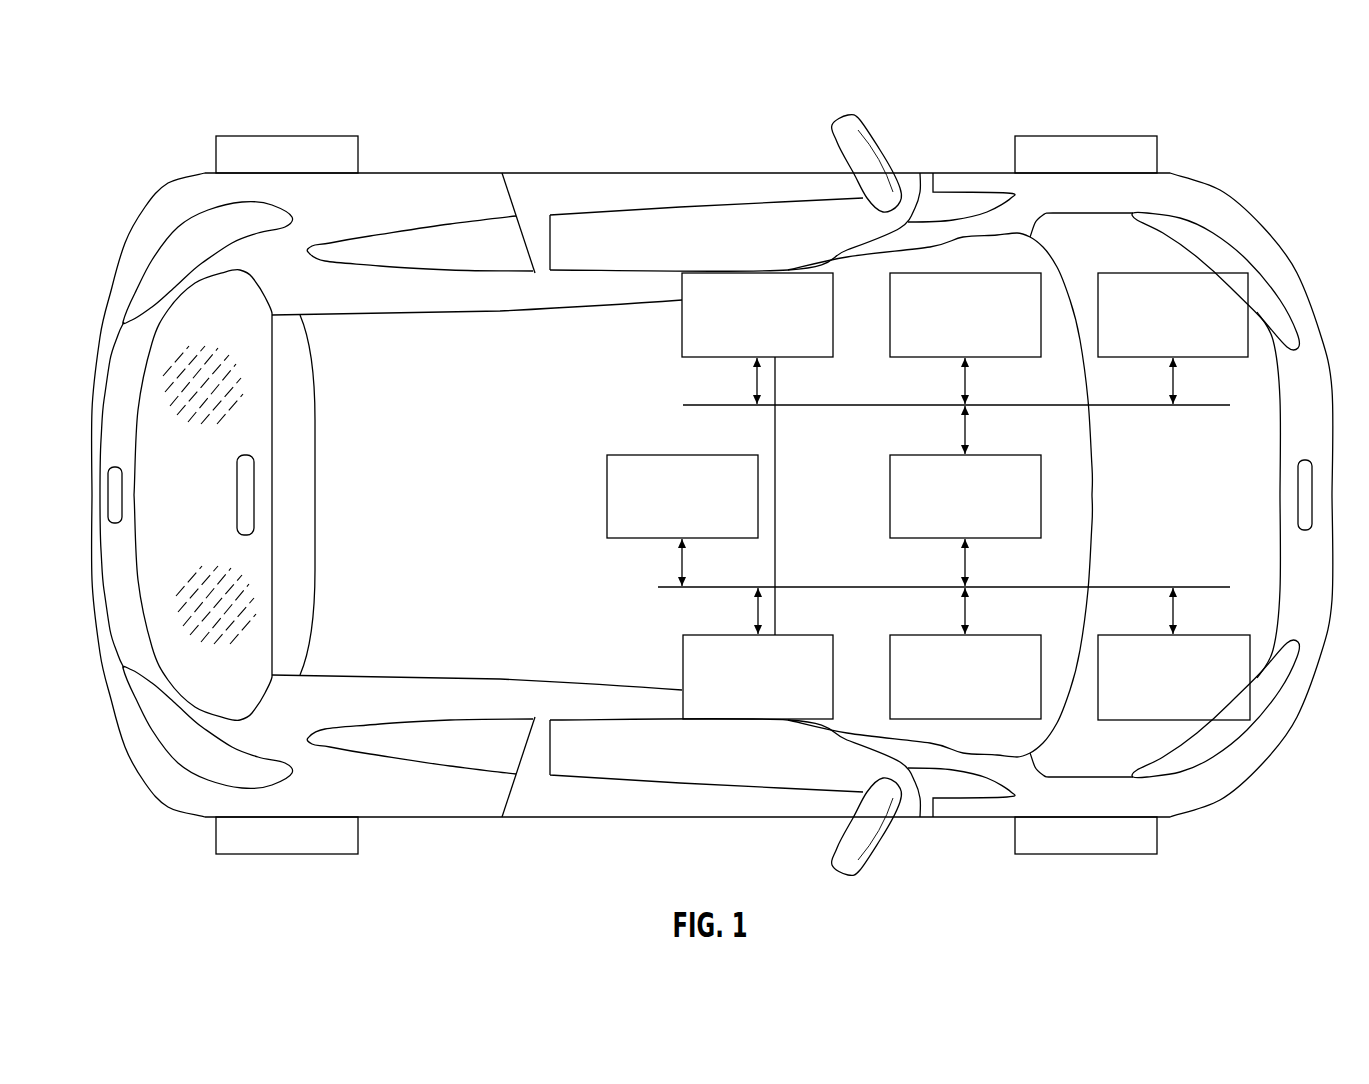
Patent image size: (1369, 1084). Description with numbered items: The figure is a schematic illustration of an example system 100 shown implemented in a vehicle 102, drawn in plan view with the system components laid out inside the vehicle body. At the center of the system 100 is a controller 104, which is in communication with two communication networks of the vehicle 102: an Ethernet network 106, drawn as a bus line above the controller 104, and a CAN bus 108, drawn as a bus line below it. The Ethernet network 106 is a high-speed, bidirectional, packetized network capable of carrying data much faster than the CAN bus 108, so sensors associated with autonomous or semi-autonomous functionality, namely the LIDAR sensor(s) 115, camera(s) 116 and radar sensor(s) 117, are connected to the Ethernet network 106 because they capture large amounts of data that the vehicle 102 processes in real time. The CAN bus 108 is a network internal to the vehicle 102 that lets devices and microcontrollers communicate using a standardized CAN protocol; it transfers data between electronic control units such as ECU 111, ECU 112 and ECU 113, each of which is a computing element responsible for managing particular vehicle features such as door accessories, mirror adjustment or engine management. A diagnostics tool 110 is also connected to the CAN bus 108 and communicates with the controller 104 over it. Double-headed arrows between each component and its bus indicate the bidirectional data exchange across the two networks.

The system 100 is at (160, 100).
The vehicle 102 is at (433, 172).
The controller 104 is at (955, 453).
The Ethernet network 106 is at (880, 405).
The CAN bus 108 is at (880, 587).
The diagnostics tool 110 is at (672, 453).
The ECU 111 is at (750, 635).
The ECU 112 is at (955, 635).
The ECU 113 is at (1167, 635).
The LIDAR sensor(s) 115 is at (703, 357).
The camera(s) 116 is at (983, 358).
The radar sensor(s) 117 is at (1190, 358).